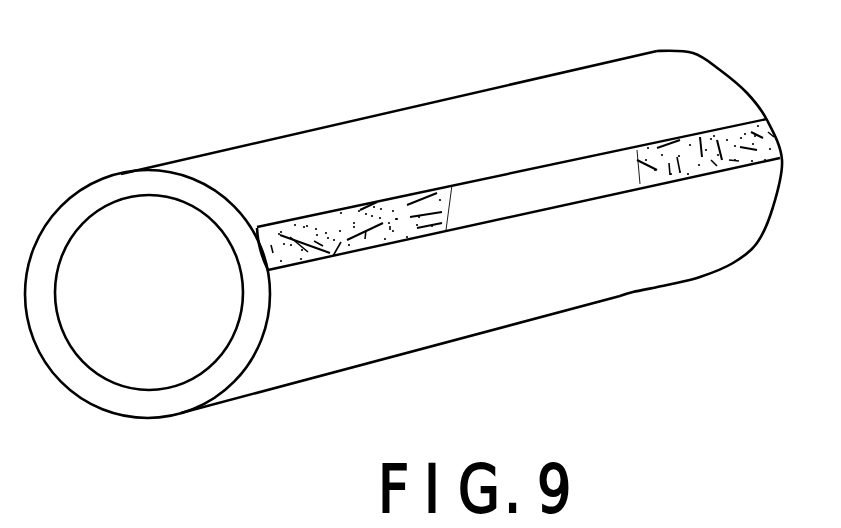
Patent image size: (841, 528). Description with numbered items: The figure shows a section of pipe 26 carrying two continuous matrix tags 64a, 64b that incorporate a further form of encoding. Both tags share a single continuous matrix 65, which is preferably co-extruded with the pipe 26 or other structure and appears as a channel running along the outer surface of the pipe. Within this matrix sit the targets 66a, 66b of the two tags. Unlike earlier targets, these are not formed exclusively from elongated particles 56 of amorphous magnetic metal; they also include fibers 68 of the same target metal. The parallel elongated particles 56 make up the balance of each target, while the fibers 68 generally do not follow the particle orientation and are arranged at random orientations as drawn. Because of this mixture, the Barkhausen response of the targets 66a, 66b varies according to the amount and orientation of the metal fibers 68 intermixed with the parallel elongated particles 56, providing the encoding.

The pipe 26 is at (517, 307).
The continuous matrix 65 is at (260, 257).
The elongated particles of amorphous magnetic metal 56 is at (371, 212).
The continuous matrix tag 64a is at (303, 217).
The continuous matrix tag 64b is at (657, 140).
The fibers of target metal 68 is at (437, 207).
The target 66a is at (343, 240).
The target 66b is at (690, 168).